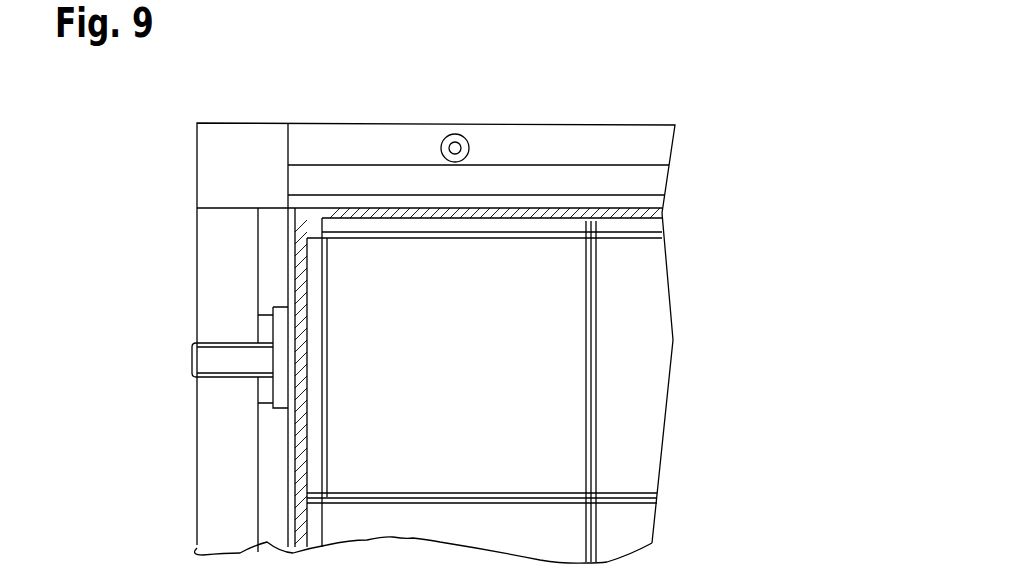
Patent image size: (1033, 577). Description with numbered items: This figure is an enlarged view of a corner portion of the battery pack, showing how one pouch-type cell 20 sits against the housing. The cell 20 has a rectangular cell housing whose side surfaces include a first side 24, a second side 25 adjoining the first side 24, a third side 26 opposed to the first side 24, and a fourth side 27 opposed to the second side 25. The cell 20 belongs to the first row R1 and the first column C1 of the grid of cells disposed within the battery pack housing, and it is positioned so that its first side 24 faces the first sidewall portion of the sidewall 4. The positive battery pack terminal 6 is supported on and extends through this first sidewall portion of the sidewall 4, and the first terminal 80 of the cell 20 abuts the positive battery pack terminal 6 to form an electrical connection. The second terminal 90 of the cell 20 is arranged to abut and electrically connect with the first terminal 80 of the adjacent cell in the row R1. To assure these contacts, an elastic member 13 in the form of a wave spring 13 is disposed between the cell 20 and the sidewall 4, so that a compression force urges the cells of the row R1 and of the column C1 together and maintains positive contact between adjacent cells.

The sidewall 4 is at (208, 472).
The elastic member 13 is at (385, 212).
The column C1 is at (537, 150).
The first side 24 is at (328, 285).
The second side 25 is at (396, 493).
The third side 26 is at (733, 293).
The fourth side 27 is at (452, 240).
The cell 20 is at (480, 386).
The positive battery pack terminal 6 is at (205, 359).
The first terminal 80 is at (327, 395).
The second terminal 90 is at (588, 383).
The row R1 is at (235, 437).